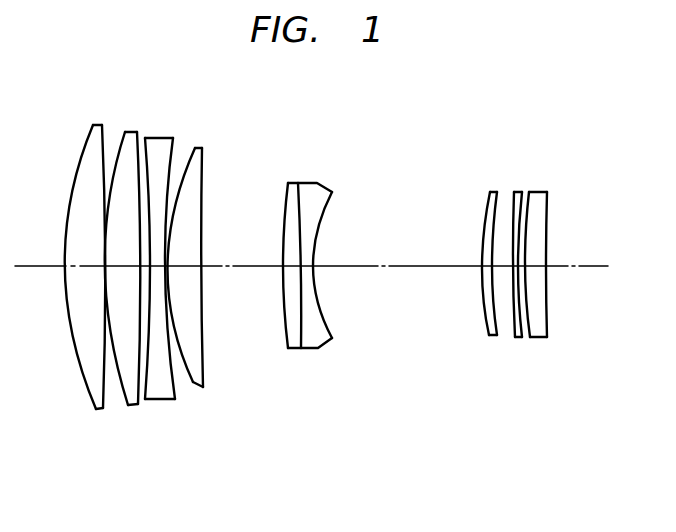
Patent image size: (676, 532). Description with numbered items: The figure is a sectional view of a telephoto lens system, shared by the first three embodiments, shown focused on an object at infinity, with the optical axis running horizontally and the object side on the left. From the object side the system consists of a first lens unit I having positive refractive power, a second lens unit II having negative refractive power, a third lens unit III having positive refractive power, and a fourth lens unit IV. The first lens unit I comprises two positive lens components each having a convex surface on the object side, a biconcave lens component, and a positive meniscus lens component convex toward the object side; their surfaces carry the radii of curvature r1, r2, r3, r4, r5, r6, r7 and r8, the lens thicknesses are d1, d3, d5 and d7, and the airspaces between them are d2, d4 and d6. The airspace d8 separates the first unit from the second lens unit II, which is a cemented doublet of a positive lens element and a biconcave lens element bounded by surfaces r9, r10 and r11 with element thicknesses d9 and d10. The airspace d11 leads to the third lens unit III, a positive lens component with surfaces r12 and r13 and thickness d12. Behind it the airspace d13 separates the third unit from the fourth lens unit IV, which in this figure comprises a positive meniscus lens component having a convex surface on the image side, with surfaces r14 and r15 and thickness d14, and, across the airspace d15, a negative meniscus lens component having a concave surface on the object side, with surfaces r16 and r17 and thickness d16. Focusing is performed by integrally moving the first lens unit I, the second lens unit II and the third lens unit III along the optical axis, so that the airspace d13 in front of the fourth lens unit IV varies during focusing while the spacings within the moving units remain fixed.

The first lens unit I is at (222, 118).
The second lens unit II is at (347, 165).
The third lens unit III is at (507, 163).
The fourth lens unit IV is at (555, 163).
The lens thickness d1 is at (82, 266).
The airspace d2 is at (106, 268).
The lens thickness d3 is at (119, 266).
The airspace d4 is at (147, 270).
The lens thickness d5 is at (164, 270).
The airspace d6 is at (167, 265).
The lens thickness d7 is at (178, 265).
The airspace d8 is at (231, 265).
The lens thickness d9 is at (293, 268).
The lens thickness d10 is at (312, 265).
The airspace d11 is at (392, 265).
The lens thickness d12 is at (487, 265).
The airspace d13 is at (505, 268).
The lens thickness d14 is at (520, 267).
The airspace d15 is at (525, 268).
The lens thickness d16 is at (537, 267).
The radius of curvature r1 is at (95, 408).
The radius of curvature r2 is at (103, 410).
The radius of curvature r3 is at (128, 404).
The radius of curvature r4 is at (138, 404).
The radius of curvature r5 is at (147, 399).
The radius of curvature r6 is at (173, 399).
The radius of curvature r7 is at (193, 382).
The radius of curvature r8 is at (203, 387).
The radius of curvature r9 is at (288, 347).
The radius of curvature r10 is at (300, 348).
The radius of curvature r11 is at (330, 338).
The radius of curvature r12 is at (489, 335).
The radius of curvature r13 is at (497, 337).
The radius of curvature r14 is at (515, 337).
The radius of curvature r15 is at (522, 338).
The radius of curvature r16 is at (531, 337).
The radius of curvature r17 is at (547, 337).